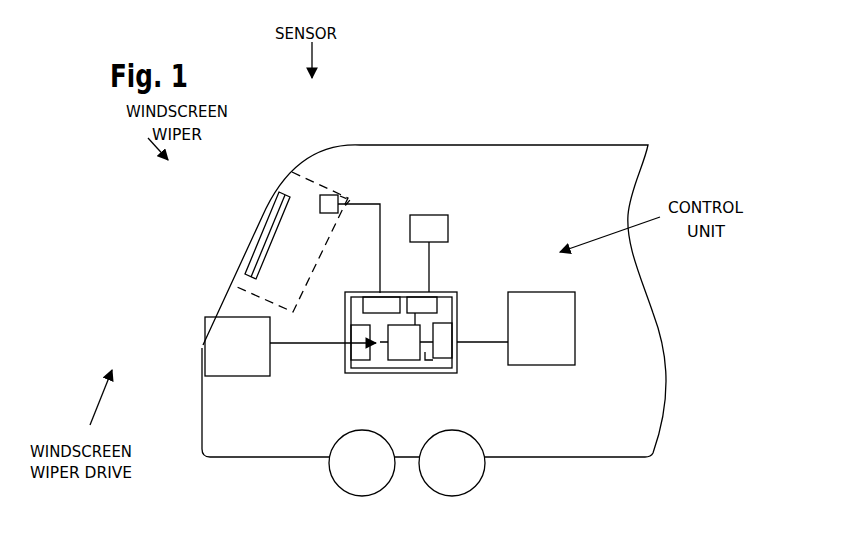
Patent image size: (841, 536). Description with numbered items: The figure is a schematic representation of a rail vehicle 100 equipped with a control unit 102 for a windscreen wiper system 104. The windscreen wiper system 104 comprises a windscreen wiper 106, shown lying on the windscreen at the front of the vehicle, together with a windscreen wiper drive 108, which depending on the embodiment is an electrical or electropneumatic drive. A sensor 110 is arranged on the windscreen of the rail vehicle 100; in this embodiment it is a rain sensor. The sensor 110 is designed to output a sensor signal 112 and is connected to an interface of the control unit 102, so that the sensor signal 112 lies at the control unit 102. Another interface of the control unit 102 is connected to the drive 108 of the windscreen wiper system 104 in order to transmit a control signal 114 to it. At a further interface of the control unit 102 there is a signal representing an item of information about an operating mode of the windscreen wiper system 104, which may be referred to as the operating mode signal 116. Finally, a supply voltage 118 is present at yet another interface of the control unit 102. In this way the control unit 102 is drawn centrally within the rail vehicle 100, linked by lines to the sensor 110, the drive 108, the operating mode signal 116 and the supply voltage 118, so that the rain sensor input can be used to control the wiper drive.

The rail vehicle 100 is at (563, 170).
The control unit 102 is at (443, 310).
The windscreen wiper system 104 is at (146, 226).
The windscreen wiper 106 is at (262, 223).
The windscreen wiper drive 108 is at (213, 347).
The sensor 110 is at (328, 195).
The sensor signal 112 is at (370, 203).
The control signal 114 is at (308, 345).
The operating mode signal 116 is at (429, 258).
The supply voltage 118 is at (477, 343).